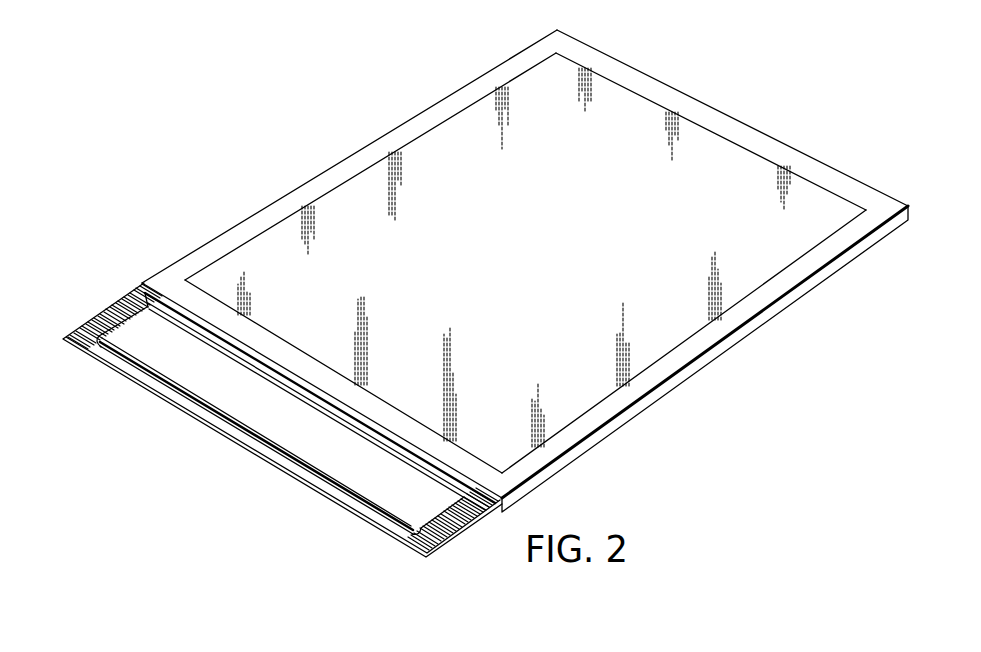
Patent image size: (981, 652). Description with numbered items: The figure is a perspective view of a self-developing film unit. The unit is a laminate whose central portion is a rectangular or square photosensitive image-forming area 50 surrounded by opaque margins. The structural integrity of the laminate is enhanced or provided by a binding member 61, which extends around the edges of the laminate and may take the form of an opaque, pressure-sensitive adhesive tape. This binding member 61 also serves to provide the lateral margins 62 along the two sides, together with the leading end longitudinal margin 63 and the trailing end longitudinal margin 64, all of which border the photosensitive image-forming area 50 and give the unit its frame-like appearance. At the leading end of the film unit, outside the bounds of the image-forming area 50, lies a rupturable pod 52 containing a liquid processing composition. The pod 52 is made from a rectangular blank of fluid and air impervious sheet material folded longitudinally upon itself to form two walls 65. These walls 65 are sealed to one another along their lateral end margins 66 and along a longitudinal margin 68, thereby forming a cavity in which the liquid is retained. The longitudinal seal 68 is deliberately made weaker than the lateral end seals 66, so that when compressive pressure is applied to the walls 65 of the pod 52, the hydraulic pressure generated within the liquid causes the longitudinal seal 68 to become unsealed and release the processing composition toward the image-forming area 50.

The photosensitive image-forming area 50 is at (525, 271).
The rupturable pod 52 is at (273, 436).
The binding member 61 is at (740, 337).
The lateral margins 62 is at (415, 123).
The leading end longitudinal margin 63 is at (380, 413).
The trailing end longitudinal margin 64 is at (758, 148).
The walls 65 is at (133, 322).
The lateral end margins 66 is at (95, 317).
The longitudinal margin 68 is at (265, 362).